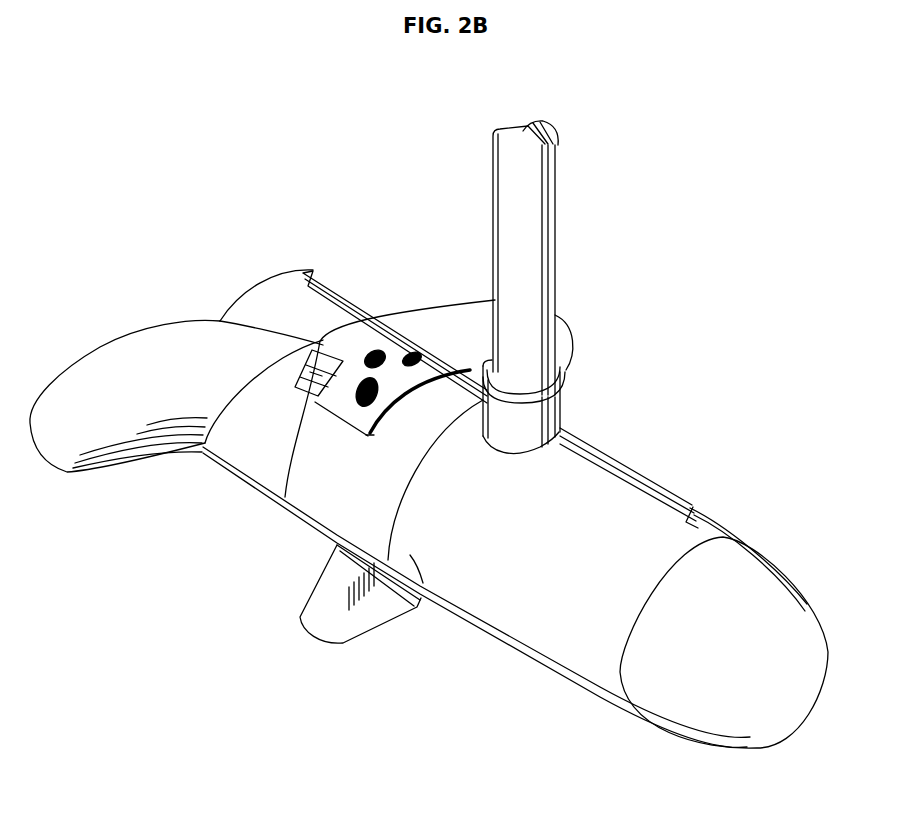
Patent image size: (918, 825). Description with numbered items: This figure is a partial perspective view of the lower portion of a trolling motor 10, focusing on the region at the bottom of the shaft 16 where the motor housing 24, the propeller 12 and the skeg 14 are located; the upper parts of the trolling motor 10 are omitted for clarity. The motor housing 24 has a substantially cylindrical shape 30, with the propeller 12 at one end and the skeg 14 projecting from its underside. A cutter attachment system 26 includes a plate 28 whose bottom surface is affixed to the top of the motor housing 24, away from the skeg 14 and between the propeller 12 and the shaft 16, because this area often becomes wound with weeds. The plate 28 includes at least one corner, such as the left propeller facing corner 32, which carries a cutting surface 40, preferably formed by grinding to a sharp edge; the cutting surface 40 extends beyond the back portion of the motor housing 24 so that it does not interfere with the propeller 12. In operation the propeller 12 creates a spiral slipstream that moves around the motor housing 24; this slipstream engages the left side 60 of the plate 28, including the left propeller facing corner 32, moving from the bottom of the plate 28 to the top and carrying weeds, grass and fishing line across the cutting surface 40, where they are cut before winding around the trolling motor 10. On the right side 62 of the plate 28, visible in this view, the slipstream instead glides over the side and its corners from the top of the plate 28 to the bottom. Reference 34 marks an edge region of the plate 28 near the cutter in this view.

The trolling motor 10 is at (688, 339).
The propeller 12 is at (173, 343).
The skeg 14 is at (366, 624).
The shaft 16 is at (525, 253).
The motor housing 24 is at (580, 567).
The cutter attachment system 26 is at (393, 291).
The plate 28 is at (401, 381).
The substantially cylindrical shape 30 is at (650, 480).
The left propeller facing corner 32 is at (296, 386).
The dome edge 34 is at (371, 435).
The cutting surface 40 is at (314, 376).
The left side 60 is at (336, 420).
The right side 62 is at (413, 346).